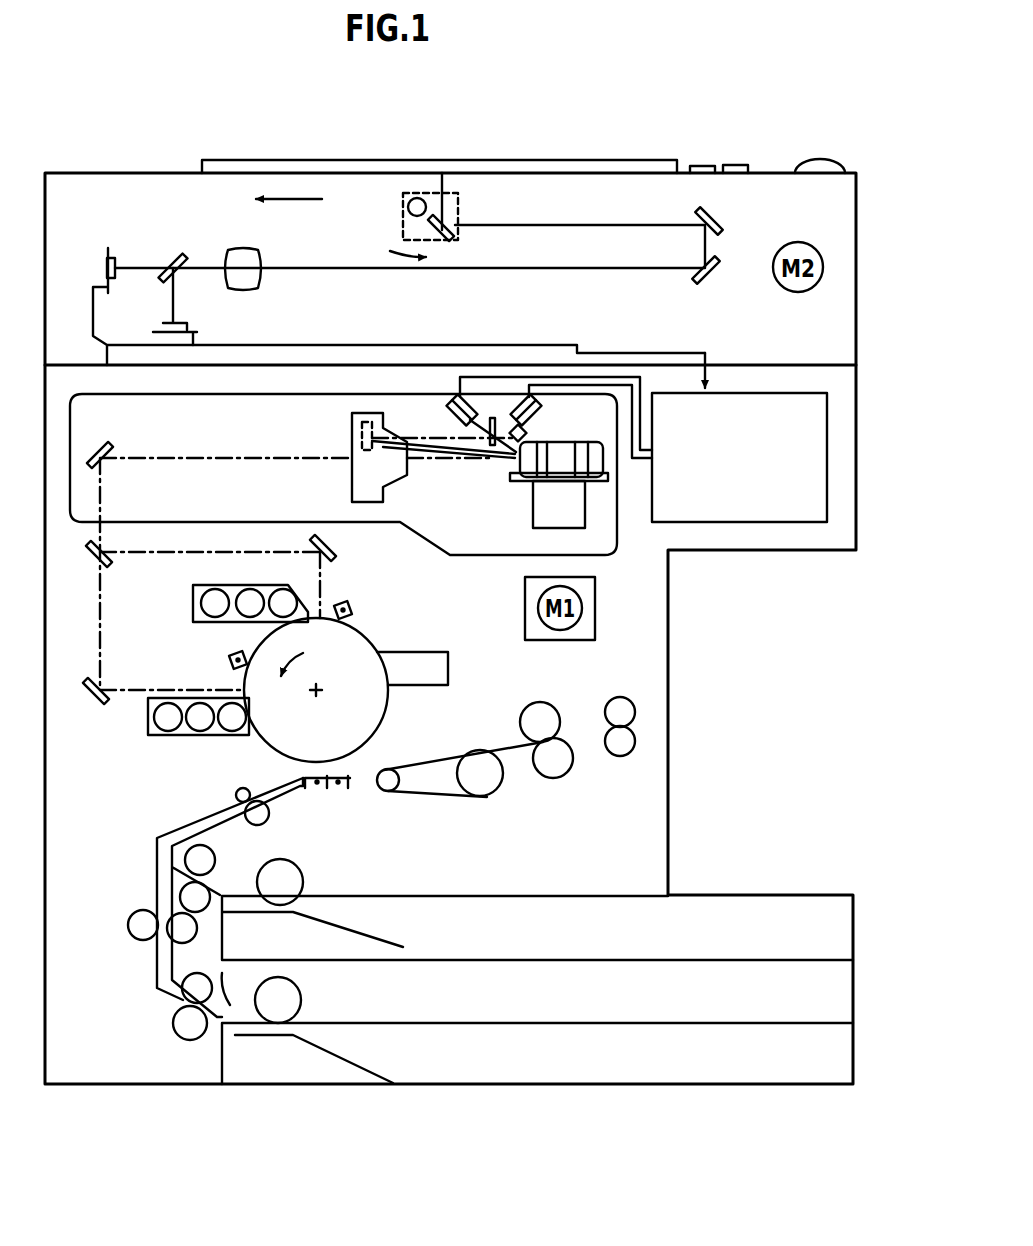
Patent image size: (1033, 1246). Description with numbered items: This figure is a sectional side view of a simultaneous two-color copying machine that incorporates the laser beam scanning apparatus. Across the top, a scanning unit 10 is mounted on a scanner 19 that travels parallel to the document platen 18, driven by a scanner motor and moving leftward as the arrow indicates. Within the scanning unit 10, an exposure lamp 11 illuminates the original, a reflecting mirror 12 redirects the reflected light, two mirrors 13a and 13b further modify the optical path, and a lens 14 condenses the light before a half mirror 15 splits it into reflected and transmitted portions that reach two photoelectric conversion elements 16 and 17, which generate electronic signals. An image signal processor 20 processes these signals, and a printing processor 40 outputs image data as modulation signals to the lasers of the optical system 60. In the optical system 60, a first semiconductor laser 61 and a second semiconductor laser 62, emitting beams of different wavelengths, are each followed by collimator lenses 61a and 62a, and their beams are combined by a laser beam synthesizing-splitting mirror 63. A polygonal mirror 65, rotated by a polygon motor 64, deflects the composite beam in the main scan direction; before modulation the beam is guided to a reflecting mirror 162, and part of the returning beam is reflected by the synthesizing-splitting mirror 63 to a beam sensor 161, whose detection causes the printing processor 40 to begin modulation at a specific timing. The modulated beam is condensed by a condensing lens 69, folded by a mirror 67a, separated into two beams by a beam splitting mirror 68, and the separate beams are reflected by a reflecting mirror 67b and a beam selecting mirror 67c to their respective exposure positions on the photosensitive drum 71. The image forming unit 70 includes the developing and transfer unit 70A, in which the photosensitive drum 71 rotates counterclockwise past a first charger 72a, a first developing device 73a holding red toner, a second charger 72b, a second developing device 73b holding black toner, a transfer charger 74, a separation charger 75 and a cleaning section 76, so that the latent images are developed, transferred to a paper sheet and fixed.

The scanning unit 10 is at (386, 257).
The exposure lamp 11 is at (406, 207).
The reflecting mirror 12 is at (453, 238).
The mirror 13a is at (716, 214).
The mirror 13b is at (712, 284).
The lens 14 is at (262, 281).
The half mirror 15 is at (179, 256).
The photoelectric conversion element 16 is at (111, 252).
The photoelectric conversion element 17 is at (187, 331).
The document platen 18 is at (462, 167).
The scanner 19 is at (459, 198).
The image signal processor 20 is at (376, 355).
The printing processor 40 is at (797, 395).
The optical system 60 is at (295, 421).
The first semiconductor laser 61 is at (542, 413).
The collimator lens 61a is at (559, 451).
The second semiconductor laser 62 is at (457, 399).
The collimator lens 62a is at (418, 419).
The laser beam synthesizing-splitting mirror 63 is at (492, 448).
The polygon motor 64 is at (573, 516).
The polygonal mirror 65 is at (556, 470).
The mirror 67a is at (113, 446).
The reflecting mirror 67b is at (91, 705).
The beam selecting mirror 67c is at (336, 550).
The beam splitting mirror 68 is at (91, 560).
The condensing lens 69 is at (357, 485).
The image forming unit 70 is at (373, 671).
The developing and transfer unit 70A is at (209, 594).
The photosensitive drum 71 is at (316, 690).
The first charger 72a is at (355, 606).
The second charger 72b is at (229, 660).
The first developing device 73a is at (194, 591).
The second developing device 73b is at (190, 737).
The transfer charger 74 is at (313, 791).
The separation charger 75 is at (334, 791).
The cleaning section 76 is at (443, 669).
The beam sensor 161 is at (511, 428).
The reflecting mirror 162 is at (357, 450).